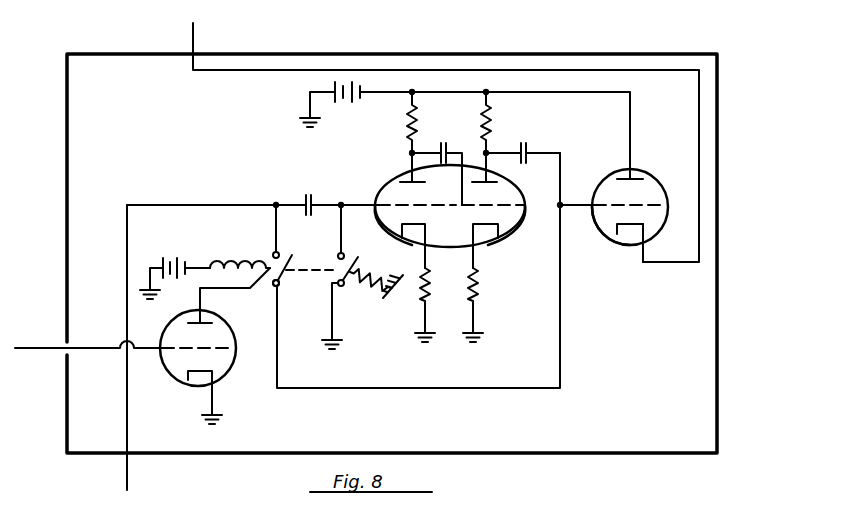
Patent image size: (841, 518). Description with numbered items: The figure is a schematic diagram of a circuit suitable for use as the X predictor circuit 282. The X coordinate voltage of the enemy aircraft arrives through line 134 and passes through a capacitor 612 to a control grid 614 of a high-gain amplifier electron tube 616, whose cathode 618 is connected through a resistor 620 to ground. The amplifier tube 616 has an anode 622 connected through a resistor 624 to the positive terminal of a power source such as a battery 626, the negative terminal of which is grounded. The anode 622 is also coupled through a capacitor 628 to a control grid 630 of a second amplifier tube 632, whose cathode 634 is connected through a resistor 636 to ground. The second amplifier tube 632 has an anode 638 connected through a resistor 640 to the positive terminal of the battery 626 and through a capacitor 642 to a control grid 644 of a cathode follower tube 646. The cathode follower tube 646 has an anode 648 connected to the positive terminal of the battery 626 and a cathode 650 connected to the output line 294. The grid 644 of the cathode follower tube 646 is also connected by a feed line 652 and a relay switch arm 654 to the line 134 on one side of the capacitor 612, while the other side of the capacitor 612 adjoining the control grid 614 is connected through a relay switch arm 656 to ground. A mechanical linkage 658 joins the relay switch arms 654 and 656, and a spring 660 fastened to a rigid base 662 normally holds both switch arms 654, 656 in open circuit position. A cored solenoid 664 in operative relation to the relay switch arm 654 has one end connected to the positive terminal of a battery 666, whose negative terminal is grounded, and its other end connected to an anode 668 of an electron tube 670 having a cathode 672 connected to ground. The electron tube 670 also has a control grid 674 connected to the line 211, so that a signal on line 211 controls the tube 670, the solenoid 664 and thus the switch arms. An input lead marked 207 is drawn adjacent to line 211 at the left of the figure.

The line 134 is at (128, 480).
The input lead 207 is at (41, 349).
The line 211 is at (52, 354).
The X predictor circuit 282 is at (497, 455).
The output line 294 is at (195, 58).
The capacitor 612 is at (306, 200).
The control grid 614 is at (386, 203).
The high-gain amplifier electron tube 616 is at (386, 232).
The cathode 618 is at (427, 230).
The resistor 620 is at (430, 274).
The anode 622 is at (402, 171).
The resistor 624 is at (417, 120).
The battery 626 is at (364, 90).
The capacitor 628 is at (442, 134).
The control grid 630 is at (503, 205).
The second amplifier tube 632 is at (517, 228).
The cathode 634 is at (484, 240).
The resistor 636 is at (478, 289).
The anode 638 is at (499, 181).
The resistor 640 is at (491, 120).
The capacitor 642 is at (528, 147).
The control grid 644 is at (608, 205).
The cathode follower tube 646 is at (603, 236).
The anode 648 is at (634, 177).
The cathode 650 is at (645, 229).
The feed line 652 is at (503, 389).
The relay switch arm 654 is at (280, 283).
The relay switch arm 656 is at (357, 262).
The mechanical linkage 658 is at (302, 244).
The spring 660 is at (364, 288).
The rigid base 662 is at (390, 302).
The cored solenoid 664 is at (226, 261).
The battery 666 is at (170, 260).
The anode 668 is at (207, 321).
The electron tube 670 is at (167, 376).
The cathode 672 is at (214, 372).
The control grid 674 is at (222, 348).